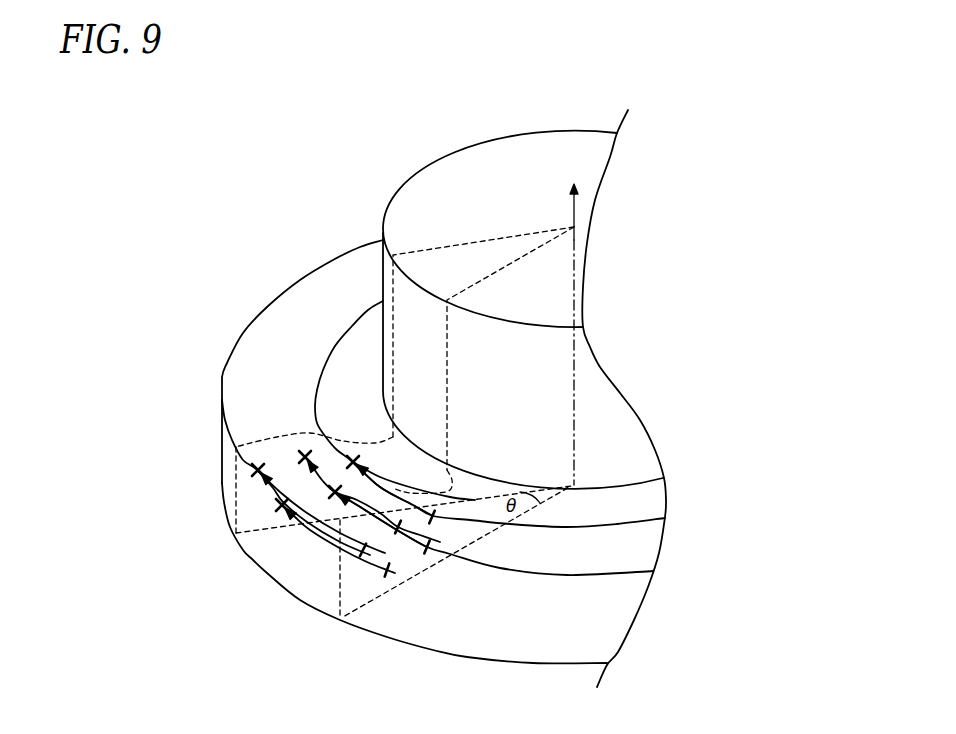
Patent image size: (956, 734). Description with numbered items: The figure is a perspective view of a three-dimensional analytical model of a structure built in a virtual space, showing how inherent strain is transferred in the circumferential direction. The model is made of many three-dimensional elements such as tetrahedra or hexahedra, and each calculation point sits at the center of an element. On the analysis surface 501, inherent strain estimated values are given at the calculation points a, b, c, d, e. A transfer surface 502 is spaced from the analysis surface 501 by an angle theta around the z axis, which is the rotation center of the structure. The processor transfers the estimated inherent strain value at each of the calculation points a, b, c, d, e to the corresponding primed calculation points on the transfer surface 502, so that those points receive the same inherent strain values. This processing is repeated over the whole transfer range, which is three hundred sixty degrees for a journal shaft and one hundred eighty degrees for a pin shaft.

The analysis surface 501 is at (340, 598).
The transfer surface 502 is at (228, 483).
The calculation point a is at (397, 487).
The calculation point b is at (369, 493).
The calculation point c is at (318, 506).
The calculation point d is at (386, 520).
The calculation point e is at (326, 547).
The z axis z is at (571, 326).